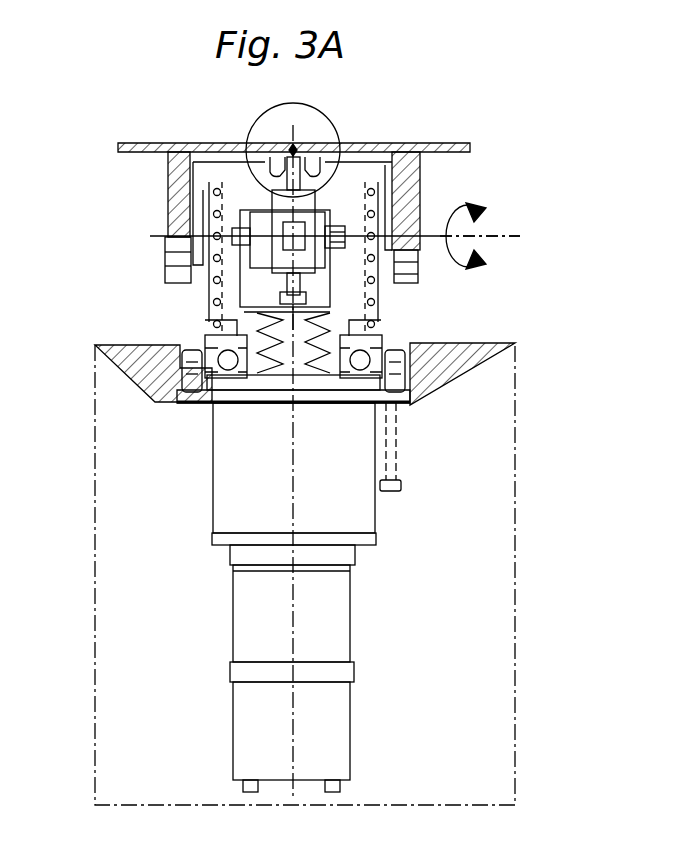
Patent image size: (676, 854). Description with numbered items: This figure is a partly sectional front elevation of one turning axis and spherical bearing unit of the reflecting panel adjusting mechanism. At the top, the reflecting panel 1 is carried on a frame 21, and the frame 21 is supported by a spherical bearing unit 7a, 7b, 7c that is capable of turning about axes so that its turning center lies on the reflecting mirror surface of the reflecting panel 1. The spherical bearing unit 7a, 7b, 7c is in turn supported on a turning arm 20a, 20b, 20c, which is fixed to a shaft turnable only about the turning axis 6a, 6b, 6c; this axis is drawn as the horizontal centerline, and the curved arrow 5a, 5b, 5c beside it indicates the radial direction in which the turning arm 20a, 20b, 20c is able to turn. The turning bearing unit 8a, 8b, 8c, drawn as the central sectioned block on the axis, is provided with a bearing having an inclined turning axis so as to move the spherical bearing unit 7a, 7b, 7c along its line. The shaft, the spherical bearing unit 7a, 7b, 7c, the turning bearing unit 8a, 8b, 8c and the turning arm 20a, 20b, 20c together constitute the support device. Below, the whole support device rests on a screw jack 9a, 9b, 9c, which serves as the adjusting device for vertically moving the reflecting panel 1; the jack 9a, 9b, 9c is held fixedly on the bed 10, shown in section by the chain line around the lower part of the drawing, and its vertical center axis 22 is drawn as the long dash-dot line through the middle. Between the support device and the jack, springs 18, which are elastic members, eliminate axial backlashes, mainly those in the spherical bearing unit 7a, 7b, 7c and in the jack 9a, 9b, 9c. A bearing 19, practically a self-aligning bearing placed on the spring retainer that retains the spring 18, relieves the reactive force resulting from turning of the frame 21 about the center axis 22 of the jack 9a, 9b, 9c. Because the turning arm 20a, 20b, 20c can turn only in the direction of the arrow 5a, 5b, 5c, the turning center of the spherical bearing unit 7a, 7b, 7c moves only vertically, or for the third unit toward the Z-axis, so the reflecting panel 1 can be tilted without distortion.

The reflecting panel 1 is at (130, 147).
The arrow 5a is at (535, 221).
The arrow 5b is at (535, 221).
The arrow 5c is at (535, 221).
The turning axis 6a is at (535, 269).
The turning axis 6b is at (535, 269).
The turning axis 6c is at (500, 238).
The spherical bearing unit 7a is at (385, 135).
The spherical bearing unit 7b is at (385, 135).
The spherical bearing unit 7c is at (335, 106).
The turning bearing unit 8a is at (206, 243).
The turning bearing unit 8b is at (206, 243).
The turning bearing unit 8c is at (253, 270).
The jack 9a is at (363, 494).
The jack 9b is at (363, 494).
The jack 9c is at (377, 520).
The bed 10 is at (515, 419).
The spring 18 is at (390, 153).
The bearing 19 is at (378, 348).
The turning arm 20a is at (210, 215).
The turning arm 20b is at (210, 215).
The turning arm 20c is at (255, 207).
The frame 21 is at (205, 172).
The center axis 22 is at (293, 608).